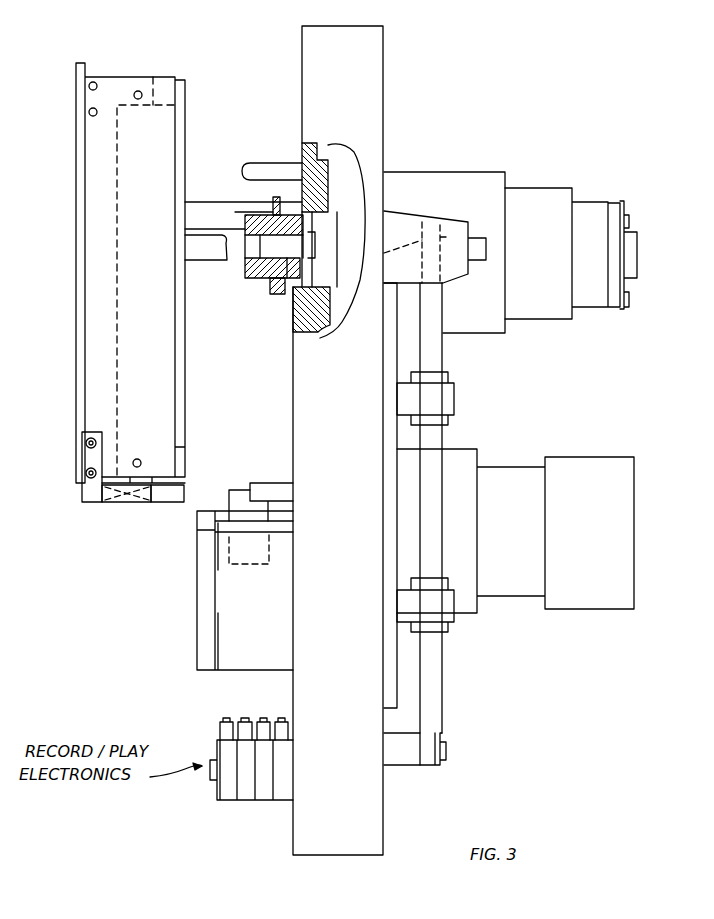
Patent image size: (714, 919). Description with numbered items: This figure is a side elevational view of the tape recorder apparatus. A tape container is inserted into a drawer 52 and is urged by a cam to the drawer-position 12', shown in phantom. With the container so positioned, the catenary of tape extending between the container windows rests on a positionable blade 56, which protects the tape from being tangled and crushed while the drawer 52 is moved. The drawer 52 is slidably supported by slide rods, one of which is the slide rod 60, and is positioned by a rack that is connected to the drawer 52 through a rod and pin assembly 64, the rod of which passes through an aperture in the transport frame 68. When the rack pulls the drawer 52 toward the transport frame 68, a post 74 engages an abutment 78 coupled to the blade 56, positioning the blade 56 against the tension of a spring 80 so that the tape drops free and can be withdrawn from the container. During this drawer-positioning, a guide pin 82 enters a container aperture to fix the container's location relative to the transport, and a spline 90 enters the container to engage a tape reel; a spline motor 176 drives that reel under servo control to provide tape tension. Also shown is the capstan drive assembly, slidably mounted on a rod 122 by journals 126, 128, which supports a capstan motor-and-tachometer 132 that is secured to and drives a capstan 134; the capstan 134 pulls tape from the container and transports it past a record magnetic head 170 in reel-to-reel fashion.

The drawer 52 is at (106, 77).
The drawer-position of the tape container 12' is at (146, 259).
The rod and pin assembly 64 is at (212, 202).
The guide pin 82 is at (267, 163).
The slide rod 60 is at (216, 261).
The spline 90 is at (258, 280).
The spline motor 176 is at (432, 172).
The rod 122 is at (434, 354).
The journal 126 is at (445, 404).
The journal 128 is at (437, 612).
The capstan motor-and-tachometer 132 is at (500, 459).
The positionable blade 56 is at (153, 478).
The post 74 is at (263, 490).
The capstan 134 is at (229, 490).
The spring 80 is at (120, 502).
The abutment 78 is at (170, 503).
The record magnetic head 170 is at (222, 645).
The transport frame 68 is at (293, 828).